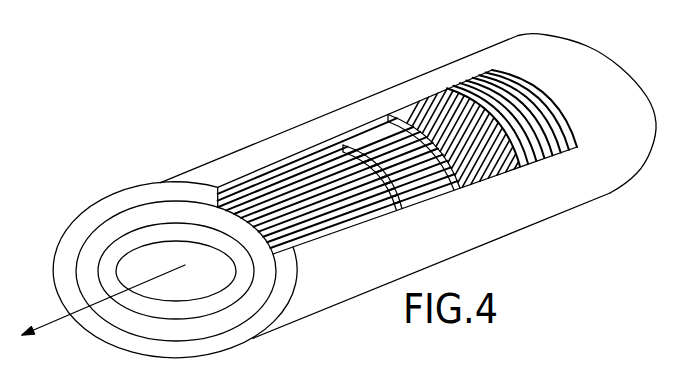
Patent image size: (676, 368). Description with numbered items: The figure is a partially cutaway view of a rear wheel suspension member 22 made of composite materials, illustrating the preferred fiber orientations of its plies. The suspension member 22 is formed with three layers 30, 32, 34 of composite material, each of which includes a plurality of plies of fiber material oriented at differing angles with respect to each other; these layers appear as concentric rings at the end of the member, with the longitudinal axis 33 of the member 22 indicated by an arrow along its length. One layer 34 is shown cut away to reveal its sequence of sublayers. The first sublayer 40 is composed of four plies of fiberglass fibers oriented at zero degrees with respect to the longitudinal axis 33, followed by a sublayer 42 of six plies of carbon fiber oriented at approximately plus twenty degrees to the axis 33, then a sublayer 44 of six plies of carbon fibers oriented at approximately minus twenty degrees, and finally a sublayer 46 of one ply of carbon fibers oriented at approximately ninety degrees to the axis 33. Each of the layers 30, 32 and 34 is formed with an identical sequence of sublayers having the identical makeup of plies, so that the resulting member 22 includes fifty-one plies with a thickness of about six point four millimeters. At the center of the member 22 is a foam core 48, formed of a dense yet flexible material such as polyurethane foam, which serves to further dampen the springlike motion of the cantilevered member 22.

The suspension member 22 is at (232, 152).
The layer 30 is at (112, 257).
The layer 32 is at (130, 222).
The longitudinal axis 33 is at (58, 318).
The layer 34 is at (148, 197).
The sublayer 40 is at (295, 192).
The sublayer 42 is at (377, 140).
The sublayer 44 is at (428, 108).
The sublayer 46 is at (492, 82).
The foam core 48 is at (217, 282).